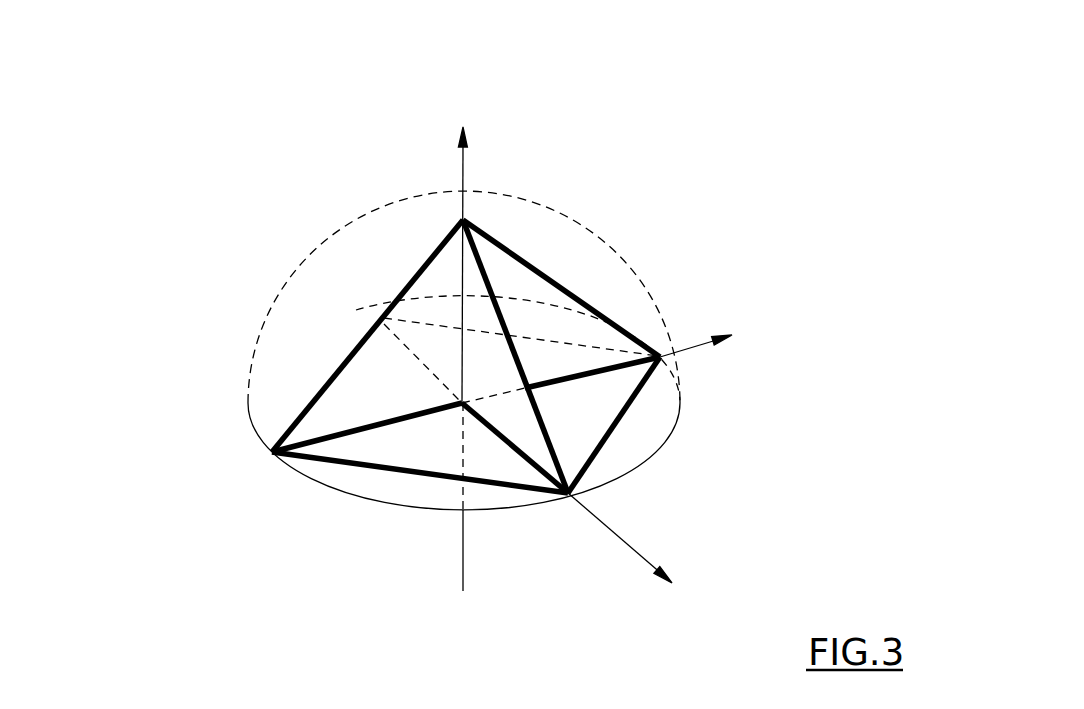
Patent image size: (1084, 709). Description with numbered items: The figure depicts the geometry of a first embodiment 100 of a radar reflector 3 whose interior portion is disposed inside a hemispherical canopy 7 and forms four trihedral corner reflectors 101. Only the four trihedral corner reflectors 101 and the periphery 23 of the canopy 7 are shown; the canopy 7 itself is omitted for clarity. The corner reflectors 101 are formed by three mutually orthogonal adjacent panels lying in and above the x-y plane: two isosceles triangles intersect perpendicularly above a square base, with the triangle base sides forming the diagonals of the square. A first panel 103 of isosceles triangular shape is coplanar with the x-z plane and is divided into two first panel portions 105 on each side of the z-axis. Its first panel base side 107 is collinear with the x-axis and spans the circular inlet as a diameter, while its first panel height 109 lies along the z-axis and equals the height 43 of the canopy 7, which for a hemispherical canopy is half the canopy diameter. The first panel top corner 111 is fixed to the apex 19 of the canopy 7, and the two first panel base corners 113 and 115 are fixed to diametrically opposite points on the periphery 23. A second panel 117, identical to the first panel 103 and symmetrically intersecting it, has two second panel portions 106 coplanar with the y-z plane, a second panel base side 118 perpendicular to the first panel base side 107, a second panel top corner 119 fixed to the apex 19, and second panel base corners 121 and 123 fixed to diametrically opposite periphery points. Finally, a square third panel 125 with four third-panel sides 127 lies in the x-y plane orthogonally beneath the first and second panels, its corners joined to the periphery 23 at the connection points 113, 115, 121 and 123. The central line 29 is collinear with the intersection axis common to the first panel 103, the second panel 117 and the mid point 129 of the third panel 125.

The first embodiment 100 is at (708, 97).
The radar reflector 3 is at (237, 238).
The trihedral corner reflectors 101 is at (175, 330).
The canopy 7 is at (620, 250).
The apex 19 is at (463, 220).
The periphery 23 is at (680, 418).
The central line 29 is at (450, 303).
The height 43 is at (460, 285).
The first panel 103 is at (600, 447).
The first panel portions 105 is at (513, 418).
The second panel portions 106 is at (553, 340).
The first panel base side 107 is at (555, 440).
The first panel height 109 is at (437, 255).
The first panel top corner 111 is at (463, 220).
The first panel base corner 113 is at (363, 317).
The first panel base corner 115 is at (575, 494).
The second panel 117 is at (307, 435).
The second panel base side 118 is at (356, 455).
The second panel top corner 119 is at (458, 250).
The second panel base corner 121 is at (663, 358).
The second panel base corner 123 is at (272, 452).
The third panel 125 is at (362, 450).
The third-panel sides 127 is at (565, 322).
The mid point 129 is at (462, 403).